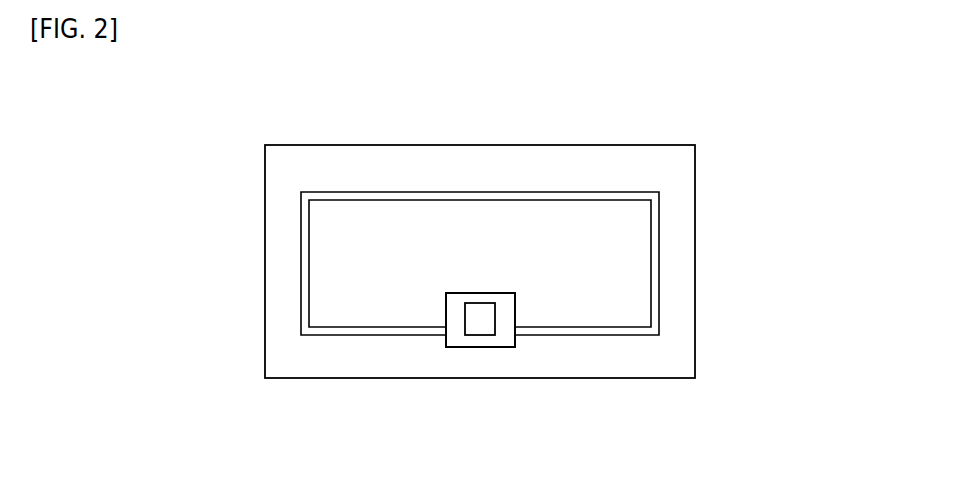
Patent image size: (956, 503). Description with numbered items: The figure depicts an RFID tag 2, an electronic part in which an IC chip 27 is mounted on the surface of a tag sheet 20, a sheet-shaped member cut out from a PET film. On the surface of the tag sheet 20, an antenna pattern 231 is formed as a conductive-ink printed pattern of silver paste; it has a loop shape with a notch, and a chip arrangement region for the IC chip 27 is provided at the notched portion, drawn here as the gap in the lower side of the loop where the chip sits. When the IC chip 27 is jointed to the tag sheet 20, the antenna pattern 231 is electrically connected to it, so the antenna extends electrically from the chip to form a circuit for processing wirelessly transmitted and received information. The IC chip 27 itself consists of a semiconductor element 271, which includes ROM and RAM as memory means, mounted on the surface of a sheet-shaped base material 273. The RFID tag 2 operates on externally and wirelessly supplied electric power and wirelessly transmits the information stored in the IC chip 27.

The RFID tag 2 is at (705, 155).
The tag sheet 20 is at (680, 347).
The antenna pattern 231 is at (653, 303).
The IC chip 27 is at (460, 348).
The semiconductor element 271 is at (483, 312).
The base material 273 is at (457, 300).